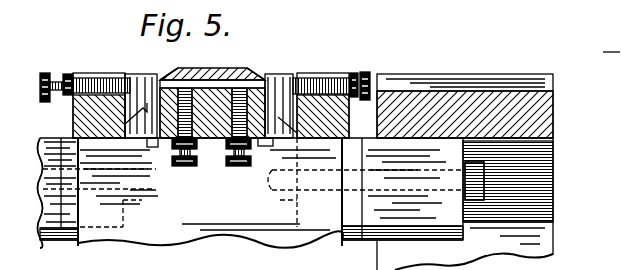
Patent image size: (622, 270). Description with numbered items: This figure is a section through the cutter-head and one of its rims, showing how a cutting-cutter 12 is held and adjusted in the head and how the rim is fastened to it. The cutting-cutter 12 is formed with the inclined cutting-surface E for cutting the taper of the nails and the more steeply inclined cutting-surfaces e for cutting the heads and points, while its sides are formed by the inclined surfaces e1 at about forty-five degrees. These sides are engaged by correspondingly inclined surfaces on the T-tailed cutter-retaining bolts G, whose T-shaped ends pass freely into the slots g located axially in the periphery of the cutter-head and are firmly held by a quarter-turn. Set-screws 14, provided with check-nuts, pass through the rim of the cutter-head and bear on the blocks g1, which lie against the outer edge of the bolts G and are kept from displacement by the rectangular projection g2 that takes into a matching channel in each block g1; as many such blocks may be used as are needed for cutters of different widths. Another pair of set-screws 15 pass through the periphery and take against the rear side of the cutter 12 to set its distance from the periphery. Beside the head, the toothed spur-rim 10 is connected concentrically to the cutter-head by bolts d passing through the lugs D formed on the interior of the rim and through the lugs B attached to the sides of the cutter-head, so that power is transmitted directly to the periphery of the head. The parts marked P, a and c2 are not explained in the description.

The set-screws 14 is at (45, 73).
The clamp block c2 is at (92, 74).
The T-tailed cutter-retaining bolts G is at (147, 74).
The blocks g1 is at (317, 57).
The cap plate P is at (223, 73).
The inclined cutting-surfaces E is at (205, 118).
The cutting-cutters 12 is at (210, 122).
The cutting-surfaces e is at (184, 86).
The inclined surfaces e1 is at (268, 71).
The set-screws 15 is at (230, 166).
The spur-rims 10 is at (545, 113).
The rectangular projection g2 is at (296, 204).
The lug a is at (212, 141).
The lugs B is at (253, 198).
The slots g is at (263, 137).
The bolts d is at (486, 181).
The lugs D is at (50, 137).